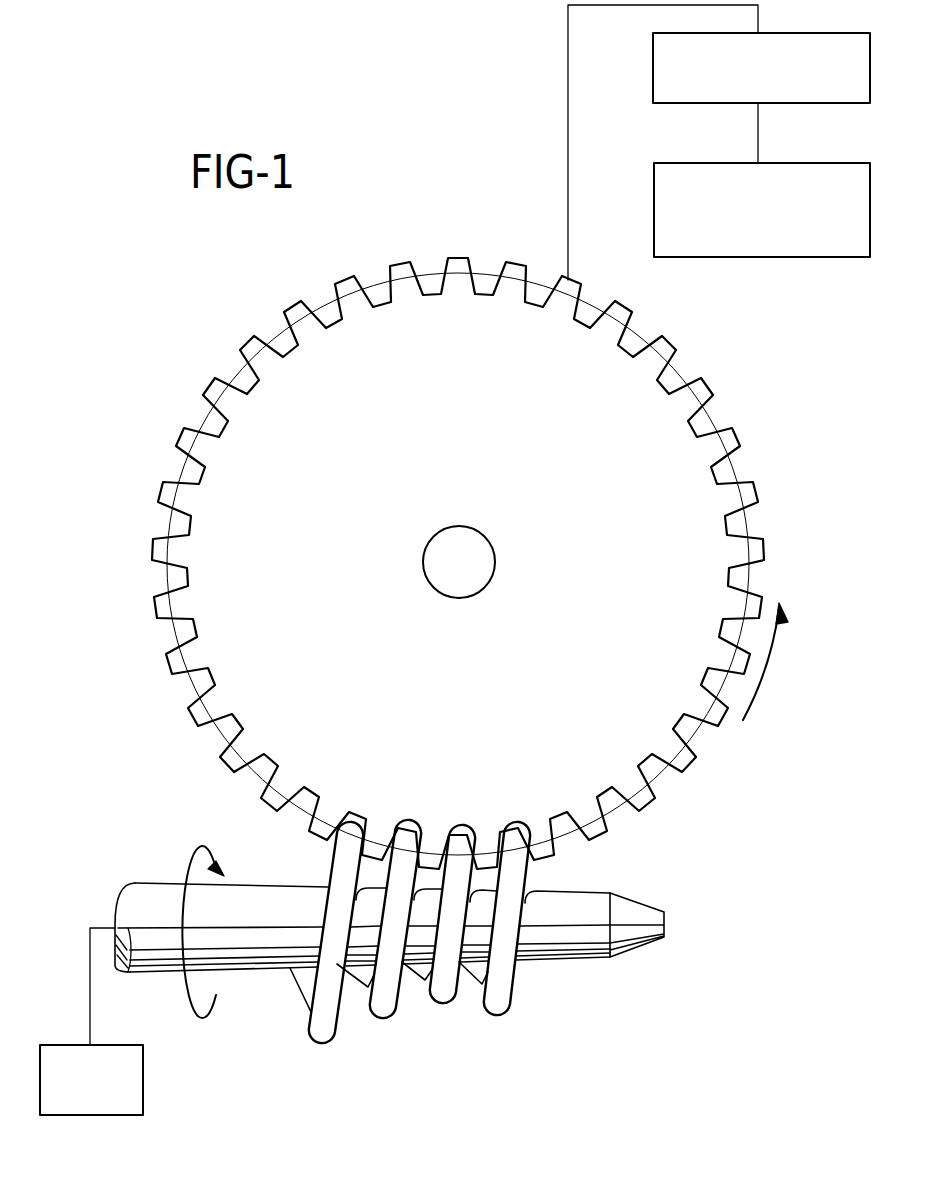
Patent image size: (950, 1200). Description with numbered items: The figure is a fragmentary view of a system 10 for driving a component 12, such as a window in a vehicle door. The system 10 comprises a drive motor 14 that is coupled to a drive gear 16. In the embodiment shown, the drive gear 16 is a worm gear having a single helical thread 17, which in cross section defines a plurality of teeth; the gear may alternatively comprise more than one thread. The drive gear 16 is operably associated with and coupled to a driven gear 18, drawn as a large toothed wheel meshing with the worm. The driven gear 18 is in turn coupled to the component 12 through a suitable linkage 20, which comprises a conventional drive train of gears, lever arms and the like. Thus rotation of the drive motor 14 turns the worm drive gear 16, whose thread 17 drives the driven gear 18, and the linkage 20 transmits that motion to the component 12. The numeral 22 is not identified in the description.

The system 10 is at (443, 561).
The component 12 is at (655, 190).
The drive motor 14 is at (143, 1085).
The drive gear 16 is at (577, 947).
The helical thread 17 is at (520, 880).
The driven gear 18 is at (195, 695).
The linkage 20 is at (653, 62).
The drive shaft 22 is at (147, 892).